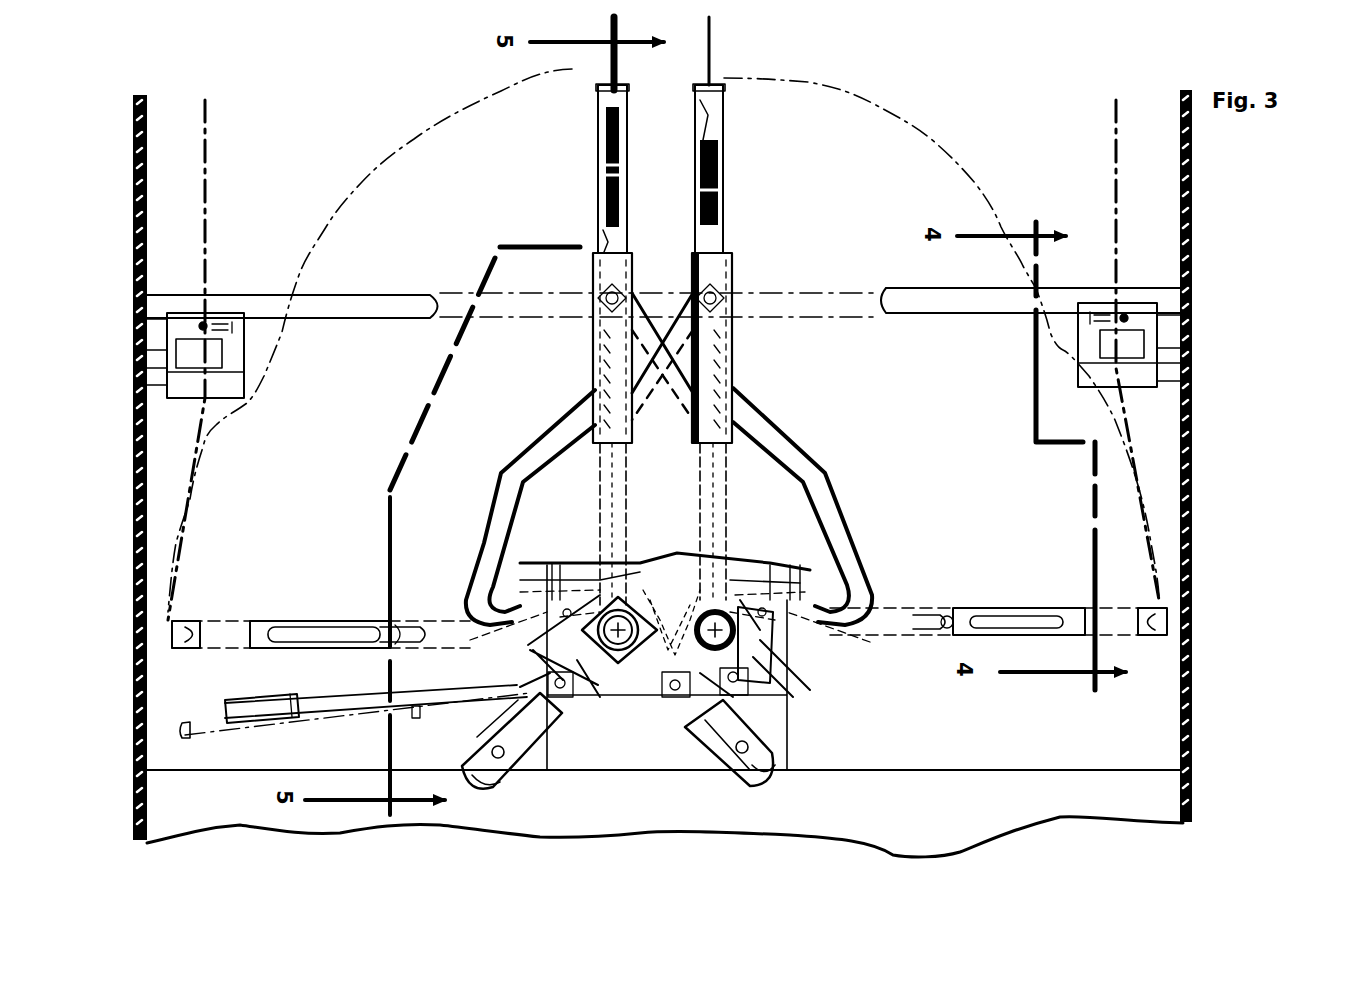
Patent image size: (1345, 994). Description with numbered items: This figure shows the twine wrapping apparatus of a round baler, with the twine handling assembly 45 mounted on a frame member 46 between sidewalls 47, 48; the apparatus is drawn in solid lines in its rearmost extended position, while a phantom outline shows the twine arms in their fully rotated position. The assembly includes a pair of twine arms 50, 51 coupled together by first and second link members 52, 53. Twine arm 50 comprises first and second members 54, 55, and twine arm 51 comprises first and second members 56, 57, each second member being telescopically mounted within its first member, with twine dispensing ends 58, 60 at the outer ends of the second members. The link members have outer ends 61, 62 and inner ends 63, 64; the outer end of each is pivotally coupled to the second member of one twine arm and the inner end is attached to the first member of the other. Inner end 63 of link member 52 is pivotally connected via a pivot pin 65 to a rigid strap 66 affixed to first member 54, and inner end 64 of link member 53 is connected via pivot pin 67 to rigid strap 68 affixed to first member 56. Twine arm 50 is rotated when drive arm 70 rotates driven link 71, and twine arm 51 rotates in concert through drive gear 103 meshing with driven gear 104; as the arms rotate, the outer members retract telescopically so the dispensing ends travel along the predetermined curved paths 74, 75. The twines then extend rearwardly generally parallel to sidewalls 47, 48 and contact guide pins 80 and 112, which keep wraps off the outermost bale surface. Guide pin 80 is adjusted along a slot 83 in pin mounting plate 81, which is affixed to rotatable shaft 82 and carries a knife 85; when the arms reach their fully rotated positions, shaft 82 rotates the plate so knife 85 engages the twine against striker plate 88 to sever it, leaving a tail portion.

The twine handling assembly 45 is at (884, 650).
The frame member 46 is at (960, 806).
The sidewall 47 is at (135, 512).
The sidewall 48 is at (1192, 556).
The twine arm 50 is at (563, 344).
The twine arm 51 is at (763, 308).
The first link member 52 is at (556, 425).
The second link member 53 is at (775, 425).
The first member 54 is at (598, 510).
The second member 55 is at (598, 135).
The first member 56 is at (725, 515).
The second member 57 is at (727, 235).
The twine dispensing end 58 is at (596, 74).
The twine dispensing end 60 is at (724, 78).
The outer end 61 is at (690, 305).
The outer end 62 is at (653, 312).
The inner end 63 is at (500, 635).
The inner end 64 is at (835, 645).
The pivot pin 65 is at (565, 560).
The rigid strap 66 is at (590, 555).
The pivot pin 67 is at (790, 655).
The rigid strap 68 is at (760, 690).
The drive arm 70 is at (275, 700).
The driven link 71 is at (535, 770).
The curved path 74 is at (375, 152).
The curved path 75 is at (931, 135).
The guide pin 80 is at (1124, 314).
The pin mounting plate 81 is at (1150, 320).
The rotatable shaft 82 is at (944, 315).
The slot 83 is at (1103, 312).
The knife 85 is at (1144, 350).
The striker plate 88 is at (1036, 362).
The drive gear 103 is at (632, 700).
The driven gear 104 is at (680, 720).
The guide pin 112 is at (203, 326).